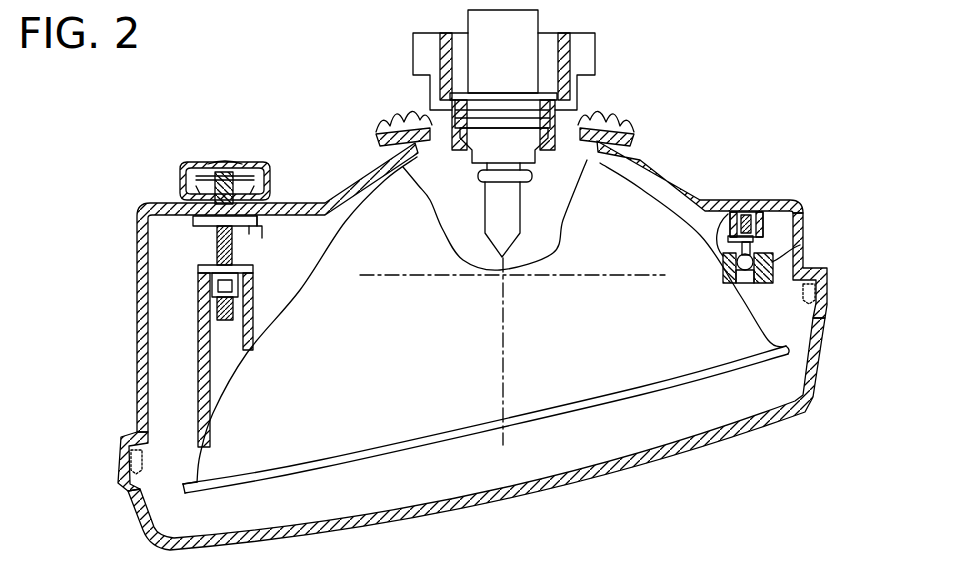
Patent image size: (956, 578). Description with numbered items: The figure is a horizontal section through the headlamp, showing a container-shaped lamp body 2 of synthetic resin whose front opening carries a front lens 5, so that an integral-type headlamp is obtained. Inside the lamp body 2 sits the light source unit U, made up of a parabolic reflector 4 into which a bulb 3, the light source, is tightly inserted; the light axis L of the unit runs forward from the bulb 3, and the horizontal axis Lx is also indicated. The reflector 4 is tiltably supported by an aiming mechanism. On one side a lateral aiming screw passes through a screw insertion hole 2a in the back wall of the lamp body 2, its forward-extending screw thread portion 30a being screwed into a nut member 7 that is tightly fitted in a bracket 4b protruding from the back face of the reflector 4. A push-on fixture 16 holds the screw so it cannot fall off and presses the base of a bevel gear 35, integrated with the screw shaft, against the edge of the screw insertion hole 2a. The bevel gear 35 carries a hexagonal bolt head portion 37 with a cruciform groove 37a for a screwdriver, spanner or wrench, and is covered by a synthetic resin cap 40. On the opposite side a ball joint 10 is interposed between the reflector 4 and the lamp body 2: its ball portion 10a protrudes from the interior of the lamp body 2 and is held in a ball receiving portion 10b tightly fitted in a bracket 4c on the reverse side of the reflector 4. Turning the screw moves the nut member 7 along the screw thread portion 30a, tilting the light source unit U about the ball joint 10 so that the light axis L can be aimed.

The lamp body 2 is at (486, 285).
The screw insertion hole 2a is at (218, 227).
The bulb 3 is at (518, 213).
The parabolic reflector 4 is at (464, 330).
The bracket 4b is at (197, 348).
The bracket 4c is at (801, 245).
The front lens 5 is at (568, 485).
The nut member 7 is at (211, 283).
The ball joint 10 is at (770, 201).
The ball portion 10a is at (723, 256).
The ball receiving portion 10b is at (772, 258).
The push-on fixture 16 is at (262, 237).
The screw thread portion 30a is at (219, 252).
The bevel gear 35 is at (254, 166).
The hexagonal bolt head portion 37 is at (216, 162).
The cruciform groove 37a is at (228, 165).
The synthetic resin cap 40 is at (200, 135).
The light source unit U is at (613, 159).
The light axis L is at (505, 357).
The horizontal axis Lx is at (443, 277).